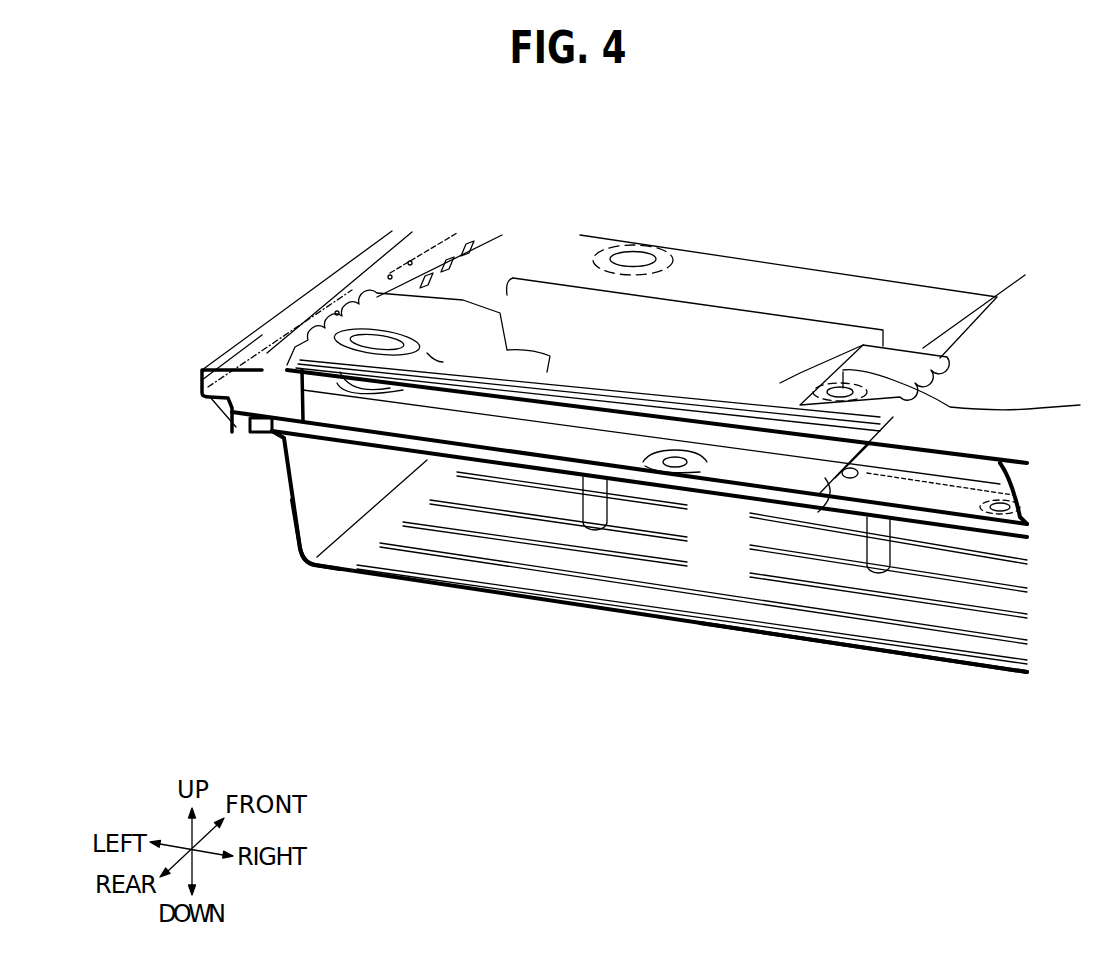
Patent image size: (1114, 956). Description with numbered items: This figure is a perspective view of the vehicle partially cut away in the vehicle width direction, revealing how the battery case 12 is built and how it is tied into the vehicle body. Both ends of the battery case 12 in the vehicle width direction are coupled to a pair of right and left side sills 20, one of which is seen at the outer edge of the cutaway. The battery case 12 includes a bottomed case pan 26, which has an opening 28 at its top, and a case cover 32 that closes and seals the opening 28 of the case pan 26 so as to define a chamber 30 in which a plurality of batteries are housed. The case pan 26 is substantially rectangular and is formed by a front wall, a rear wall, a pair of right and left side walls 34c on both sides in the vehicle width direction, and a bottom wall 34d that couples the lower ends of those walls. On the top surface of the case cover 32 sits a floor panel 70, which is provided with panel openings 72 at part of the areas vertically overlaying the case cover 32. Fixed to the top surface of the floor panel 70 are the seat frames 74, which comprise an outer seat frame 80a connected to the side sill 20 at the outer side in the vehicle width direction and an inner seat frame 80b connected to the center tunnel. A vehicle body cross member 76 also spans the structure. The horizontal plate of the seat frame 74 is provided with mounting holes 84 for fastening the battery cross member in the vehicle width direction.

The battery case 12 is at (722, 698).
The side sill 20 is at (284, 292).
The case pan 26 is at (640, 614).
The opening 28 is at (312, 455).
The chamber 30 is at (736, 570).
The case cover 32 is at (534, 477).
The side wall 34c is at (303, 525).
The bottom wall 34d is at (888, 652).
The floor panel 70 is at (930, 310).
The panel opening 72 is at (775, 324).
The seat frame 74 is at (472, 295).
The vehicle body cross member 76 is at (627, 402).
The outer seat frame 80a is at (410, 315).
The inner seat frame 80b is at (893, 363).
The mounting hole 84 is at (325, 642).